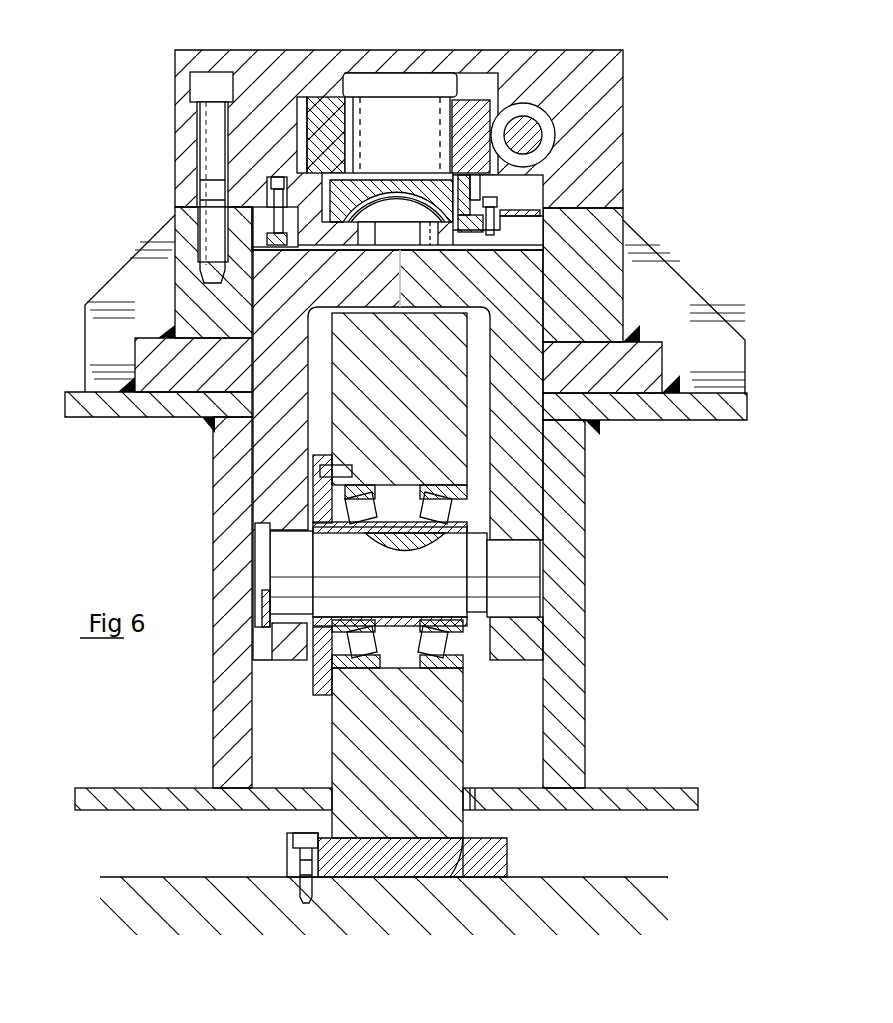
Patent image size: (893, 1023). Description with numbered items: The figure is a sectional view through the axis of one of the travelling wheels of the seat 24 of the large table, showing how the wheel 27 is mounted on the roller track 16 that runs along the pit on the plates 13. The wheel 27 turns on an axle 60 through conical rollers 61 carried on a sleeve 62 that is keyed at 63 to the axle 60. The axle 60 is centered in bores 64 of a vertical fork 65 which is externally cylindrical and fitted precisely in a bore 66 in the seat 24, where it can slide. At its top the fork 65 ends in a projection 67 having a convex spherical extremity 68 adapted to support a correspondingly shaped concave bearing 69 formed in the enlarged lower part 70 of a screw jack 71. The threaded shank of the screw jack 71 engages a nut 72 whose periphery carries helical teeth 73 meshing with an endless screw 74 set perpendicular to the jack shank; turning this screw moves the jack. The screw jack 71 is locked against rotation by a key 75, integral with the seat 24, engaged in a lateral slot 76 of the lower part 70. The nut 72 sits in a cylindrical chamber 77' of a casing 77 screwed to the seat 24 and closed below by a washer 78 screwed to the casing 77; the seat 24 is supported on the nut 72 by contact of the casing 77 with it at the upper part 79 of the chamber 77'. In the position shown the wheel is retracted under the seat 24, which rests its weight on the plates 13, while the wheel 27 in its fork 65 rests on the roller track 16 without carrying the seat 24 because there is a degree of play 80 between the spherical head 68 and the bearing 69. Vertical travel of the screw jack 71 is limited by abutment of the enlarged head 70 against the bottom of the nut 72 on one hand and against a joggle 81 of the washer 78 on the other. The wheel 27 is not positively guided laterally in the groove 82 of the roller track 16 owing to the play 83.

The plate 13 is at (207, 875).
The roller track 16 is at (485, 855).
The seat 24 is at (600, 380).
The wheel 27 is at (413, 733).
The axle 60 is at (405, 574).
The conical roller 61 is at (432, 500).
The sleeve 62 is at (388, 657).
The key 63 is at (385, 538).
The bore 64 is at (290, 628).
The vertical fork 65 is at (522, 482).
The bore 66 is at (253, 440).
The projection of the fork 67 is at (398, 237).
The convex spherical extremity 68 is at (380, 215).
The concave bearing 69 is at (440, 210).
The enlarged lower part 70 is at (340, 195).
The screw jack 71 is at (401, 136).
The nut 72 is at (465, 112).
The helical teeth 73 is at (498, 100).
The endless screw 74 is at (535, 135).
The key 75 is at (502, 192).
The lateral slot 76 is at (462, 190).
The casing 77 is at (223, 148).
The cylindrical chamber 77' is at (260, 57).
The washer 78 is at (295, 222).
The upper part of the cylindrical chamber 79 is at (323, 97).
The play 80 is at (347, 207).
The joggle 81 is at (328, 245).
The groove 82 is at (332, 837).
The play 83 is at (453, 840).